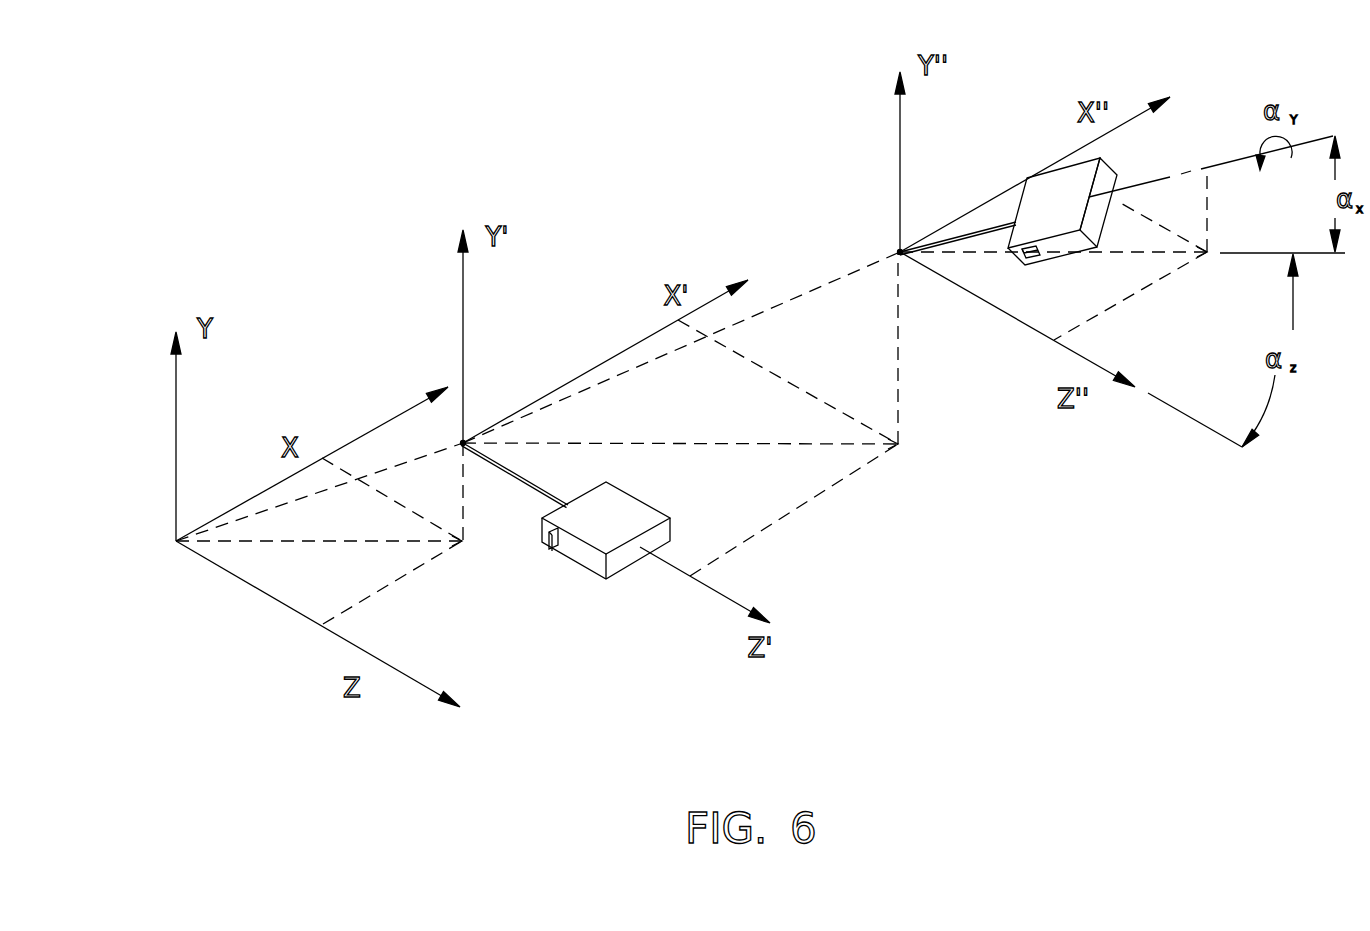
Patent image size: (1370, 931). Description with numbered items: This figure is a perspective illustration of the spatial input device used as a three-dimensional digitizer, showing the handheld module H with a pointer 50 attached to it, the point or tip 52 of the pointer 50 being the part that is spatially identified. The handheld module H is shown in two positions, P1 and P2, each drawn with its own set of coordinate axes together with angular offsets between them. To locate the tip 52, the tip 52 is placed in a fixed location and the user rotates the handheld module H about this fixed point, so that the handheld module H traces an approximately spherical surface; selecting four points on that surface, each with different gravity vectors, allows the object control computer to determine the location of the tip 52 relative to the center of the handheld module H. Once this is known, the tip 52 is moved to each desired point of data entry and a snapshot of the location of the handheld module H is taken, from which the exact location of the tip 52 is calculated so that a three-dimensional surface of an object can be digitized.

The pointer 50 is at (522, 490).
The tip of the pointer 52 is at (467, 433).
The handheld module H is at (588, 577).
The first position of housing tip P1 is at (455, 437).
The second position of housing tip P2 is at (895, 247).